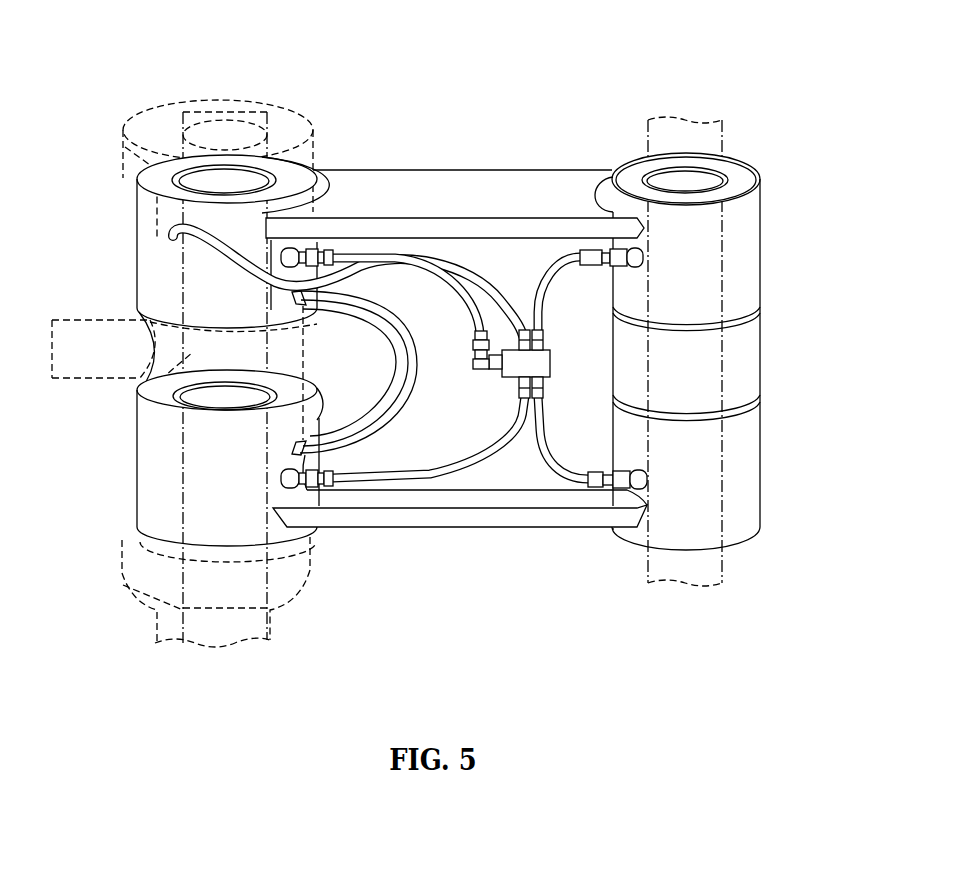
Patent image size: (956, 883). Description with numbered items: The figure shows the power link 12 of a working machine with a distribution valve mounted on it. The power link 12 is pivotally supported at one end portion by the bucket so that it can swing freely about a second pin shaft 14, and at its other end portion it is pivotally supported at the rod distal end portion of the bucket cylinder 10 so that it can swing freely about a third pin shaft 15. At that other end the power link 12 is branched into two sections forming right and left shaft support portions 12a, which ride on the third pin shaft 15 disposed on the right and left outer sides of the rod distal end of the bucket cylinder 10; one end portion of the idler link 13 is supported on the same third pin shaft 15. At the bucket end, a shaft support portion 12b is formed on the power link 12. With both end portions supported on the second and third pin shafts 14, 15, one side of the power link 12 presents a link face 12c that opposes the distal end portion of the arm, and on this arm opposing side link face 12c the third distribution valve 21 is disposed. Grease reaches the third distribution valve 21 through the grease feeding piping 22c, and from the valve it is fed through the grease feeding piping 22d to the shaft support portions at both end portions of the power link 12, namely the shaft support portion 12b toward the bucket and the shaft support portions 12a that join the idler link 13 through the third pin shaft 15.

The bucket cylinder 10 is at (104, 348).
The power link 12 is at (474, 150).
The shaft support portions 12a is at (165, 273).
The shaft support portion 12b is at (742, 272).
The link face 12c is at (516, 470).
The idler link 13 is at (286, 123).
The second pin shaft 14 is at (708, 142).
The third pin shaft 15 is at (193, 353).
The third distribution valve 21 is at (512, 366).
The grease feeding piping 22c is at (243, 250).
The grease feeding piping 22d is at (372, 254).